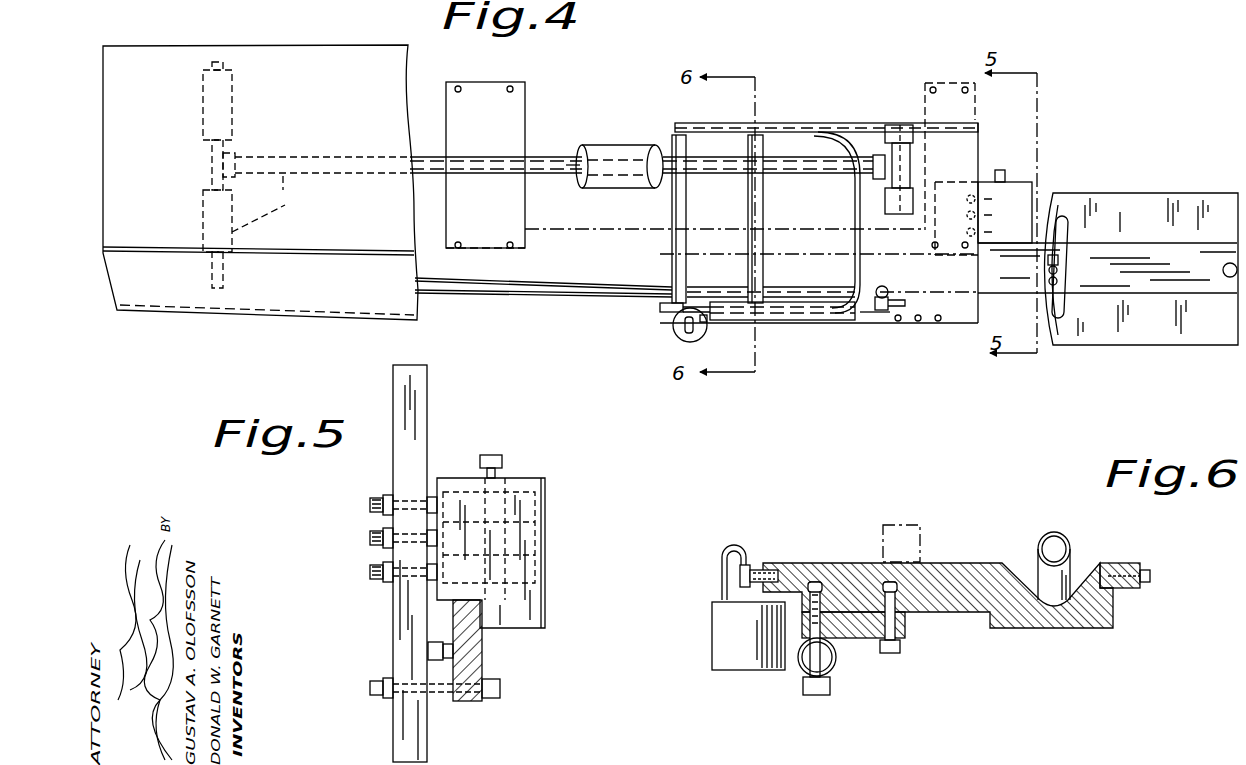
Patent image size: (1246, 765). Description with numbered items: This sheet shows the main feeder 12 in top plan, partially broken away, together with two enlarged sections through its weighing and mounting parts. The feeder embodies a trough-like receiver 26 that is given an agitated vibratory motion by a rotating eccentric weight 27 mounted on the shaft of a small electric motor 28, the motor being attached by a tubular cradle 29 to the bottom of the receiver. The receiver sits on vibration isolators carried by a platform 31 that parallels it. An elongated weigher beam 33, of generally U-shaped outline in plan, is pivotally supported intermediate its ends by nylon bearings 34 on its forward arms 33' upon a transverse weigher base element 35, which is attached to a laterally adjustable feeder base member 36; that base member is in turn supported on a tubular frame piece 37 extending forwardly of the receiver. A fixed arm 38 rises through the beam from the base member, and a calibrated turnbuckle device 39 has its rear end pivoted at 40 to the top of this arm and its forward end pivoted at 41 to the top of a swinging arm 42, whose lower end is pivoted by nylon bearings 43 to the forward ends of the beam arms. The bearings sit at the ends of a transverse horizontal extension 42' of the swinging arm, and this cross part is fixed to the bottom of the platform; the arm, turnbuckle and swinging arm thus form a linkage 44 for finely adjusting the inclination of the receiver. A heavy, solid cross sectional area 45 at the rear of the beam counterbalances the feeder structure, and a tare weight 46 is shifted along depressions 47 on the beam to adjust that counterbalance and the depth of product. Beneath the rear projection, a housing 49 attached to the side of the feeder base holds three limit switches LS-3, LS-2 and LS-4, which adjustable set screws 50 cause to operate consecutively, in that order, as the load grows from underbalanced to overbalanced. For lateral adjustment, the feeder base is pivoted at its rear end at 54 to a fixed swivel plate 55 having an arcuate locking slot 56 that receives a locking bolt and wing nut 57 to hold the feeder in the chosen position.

In FIG. 4, the main feeder 12 is at (865, 330).
In FIG. 5, the main feeder 12 is at (390, 598).
In FIG. 4, the trough-like receiver 26 is at (320, 320).
In FIG. 4, the rotating eccentric weight 27 is at (578, 173).
In FIG. 4, the small electric motor 28 is at (610, 145).
In FIG. 4, the tubular cradle 29 is at (872, 182).
In FIG. 6, the tubular cradle 29 is at (1068, 537).
In FIG. 4, the platform 31 is at (516, 226).
In FIG. 6, the platform 31 is at (917, 527).
In FIG. 4, the weigher beam 33 is at (929, 362).
In FIG. 5, the weigher beam 33 is at (472, 737).
In FIG. 6, the weigher beam 33 is at (955, 576).
In FIG. 4, the forward arms of the weigher beam 33' is at (826, 226).
In FIG. 6, the forward arms of the weigher beam 33' is at (912, 551).
In FIG. 4, the nylon bearings 34 is at (757, 134).
In FIG. 4, the transverse weigher base element 35 is at (760, 210).
In FIG. 6, the transverse weigher base element 35 is at (1020, 630).
In FIG. 4, the feeder base member 36 is at (760, 260).
In FIG. 5, the feeder base member 36 is at (482, 665).
In FIG. 6, the feeder base member 36 is at (870, 642).
In FIG. 4, the tubular frame piece 37 is at (495, 292).
In FIG. 6, the tubular frame piece 37 is at (837, 665).
In FIG. 4, the fixed arm 38 is at (893, 295).
In FIG. 4, the turnbuckle device 39 is at (840, 330).
In FIG. 4, the pivot 40 is at (905, 306).
In FIG. 4, the pivot 41 is at (665, 318).
In FIG. 4, the swinging arm 42 is at (643, 280).
In FIG. 4, the transverse horizontal extension 42' is at (701, 207).
In FIG. 4, the nylon bearings 43 is at (680, 134).
In FIG. 4, the linkage 44 is at (672, 201).
In FIG. 4, the solid cross sectional area 45 is at (968, 327).
In FIG. 5, the solid cross sectional area 45 is at (427, 400).
In FIG. 4, the tare weight 46 is at (657, 339).
In FIG. 6, the tare weight 46 is at (712, 640).
In FIG. 4, the depressions 47 is at (710, 325).
In FIG. 4, the housing 49 is at (1010, 182).
In FIG. 5, the housing 49 is at (507, 478).
In FIG. 5, the adjustable set screws 50 is at (370, 572).
In FIG. 4, the pivot 54 is at (1228, 277).
In FIG. 4, the swivel plate 55 is at (1138, 333).
In FIG. 4, the arcuate locking slot 56 is at (1063, 320).
In FIG. 4, the locking bolt and wing nut 57 is at (1062, 255).
In FIG. 4, the limit switch LS-3 is at (1008, 196).
In FIG. 5, the limit switch LS-3 is at (505, 500).
In FIG. 4, the limit switch LS-2 is at (1008, 213).
In FIG. 5, the limit switch LS-2 is at (510, 540).
In FIG. 4, the limit switch LS-4 is at (1008, 230).
In FIG. 5, the limit switch LS-4 is at (545, 568).